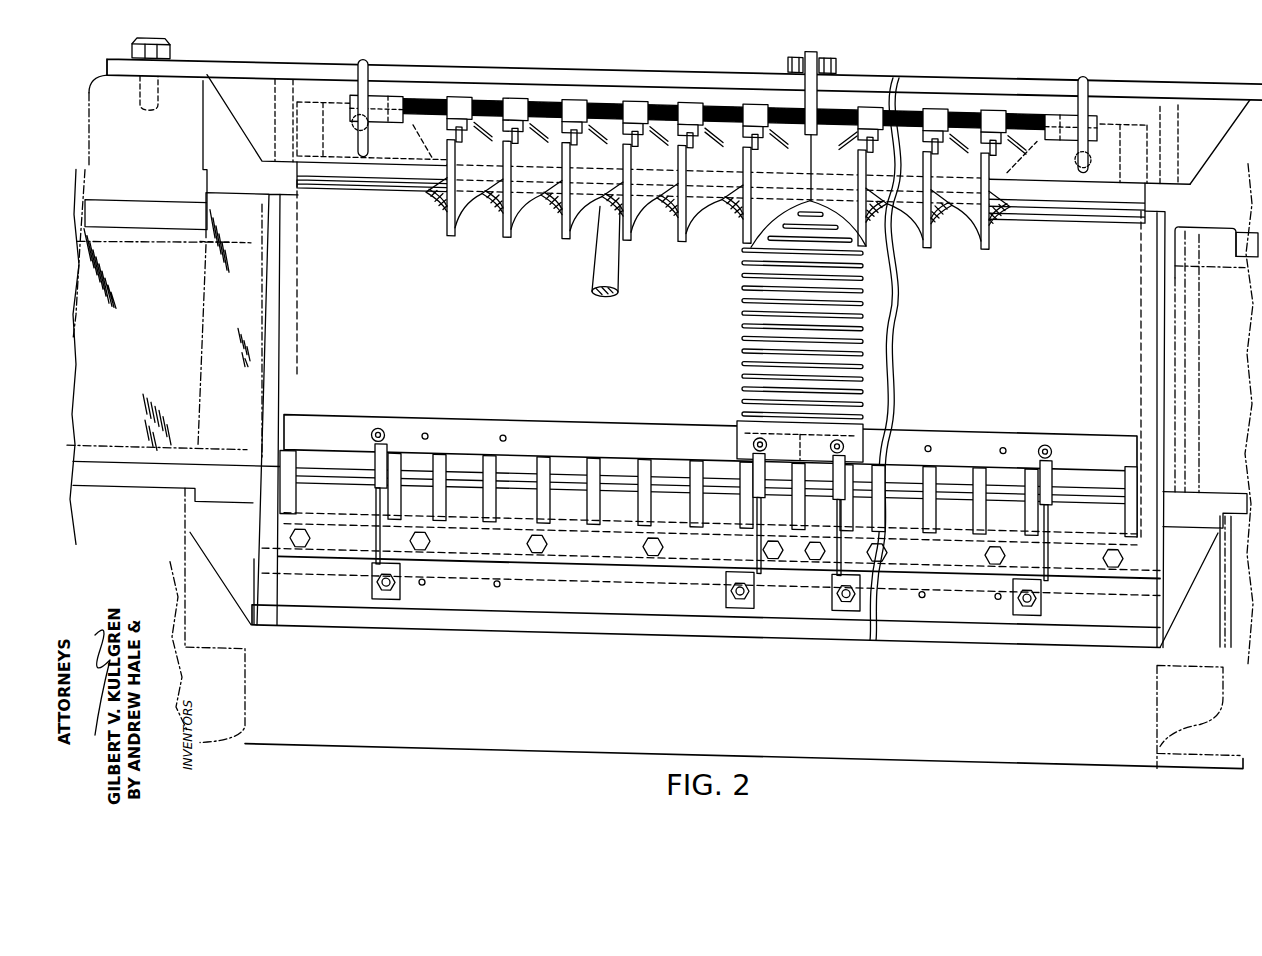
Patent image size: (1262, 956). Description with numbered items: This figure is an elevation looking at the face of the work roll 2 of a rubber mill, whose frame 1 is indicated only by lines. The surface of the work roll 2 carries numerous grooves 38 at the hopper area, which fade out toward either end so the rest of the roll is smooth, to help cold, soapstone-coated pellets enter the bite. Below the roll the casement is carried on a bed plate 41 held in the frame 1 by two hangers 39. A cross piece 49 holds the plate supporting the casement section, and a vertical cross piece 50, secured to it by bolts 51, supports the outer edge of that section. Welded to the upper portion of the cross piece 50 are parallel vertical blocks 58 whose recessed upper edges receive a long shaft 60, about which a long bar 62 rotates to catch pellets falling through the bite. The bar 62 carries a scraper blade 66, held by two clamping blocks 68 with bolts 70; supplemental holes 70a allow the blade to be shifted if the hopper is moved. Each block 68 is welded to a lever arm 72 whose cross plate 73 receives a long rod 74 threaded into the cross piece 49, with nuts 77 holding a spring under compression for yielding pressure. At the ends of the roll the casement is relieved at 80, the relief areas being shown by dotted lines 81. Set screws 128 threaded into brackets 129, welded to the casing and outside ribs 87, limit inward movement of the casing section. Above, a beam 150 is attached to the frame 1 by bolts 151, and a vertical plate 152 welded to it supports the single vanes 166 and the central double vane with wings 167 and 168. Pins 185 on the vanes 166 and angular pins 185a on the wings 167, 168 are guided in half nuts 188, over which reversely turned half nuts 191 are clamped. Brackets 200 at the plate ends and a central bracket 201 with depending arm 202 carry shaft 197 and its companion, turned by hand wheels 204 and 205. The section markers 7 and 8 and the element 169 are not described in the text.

The frame 1 is at (108, 78).
The work roll 2 is at (286, 272).
The section line 7 is at (542, 596).
The section line 8 is at (846, 650).
The grooves 38 is at (745, 290).
The hangers 39 is at (238, 585).
The bed plate 41 is at (600, 628).
The cross piece 49 is at (676, 612).
The vertical cross piece 50 is at (610, 565).
The bolts 51 is at (432, 541).
The vertical blocks 58 is at (700, 458).
The shaft 60 is at (585, 456).
The bar 62 is at (418, 423).
The scraper blade 66 is at (862, 433).
The clamping blocks 68 is at (374, 481).
The bolts 70 is at (371, 435).
The supplemental holes 70a is at (503, 434).
The lever arm 72 is at (376, 560).
The cross plate 73 is at (378, 602).
The rod 74 is at (372, 580).
The nuts 77 is at (372, 590).
The relief 80 is at (297, 179).
The relief area 81 is at (443, 282).
The outside ribs 87 is at (1170, 128).
The set screws 128 is at (396, 142).
The brackets 129 is at (440, 104).
The beam 150 is at (302, 52).
The bolts 151 is at (168, 49).
The vertical plate 152 is at (256, 128).
The single vanes 166 is at (463, 222).
The wing of double vane 167 is at (757, 246).
The wing of double vane 168 is at (865, 244).
The cutter sections 169 is at (428, 200).
The pin 185 is at (566, 143).
The pin 185a is at (748, 147).
The half nut 188 is at (468, 134).
The half nut 191 is at (573, 101).
The shaft 197 is at (490, 100).
The bracket 200 is at (395, 96).
The bracket 201 is at (818, 53).
The depending arm 202 is at (821, 102).
The hand wheel 204 is at (1090, 82).
The hand wheel 205 is at (372, 66).